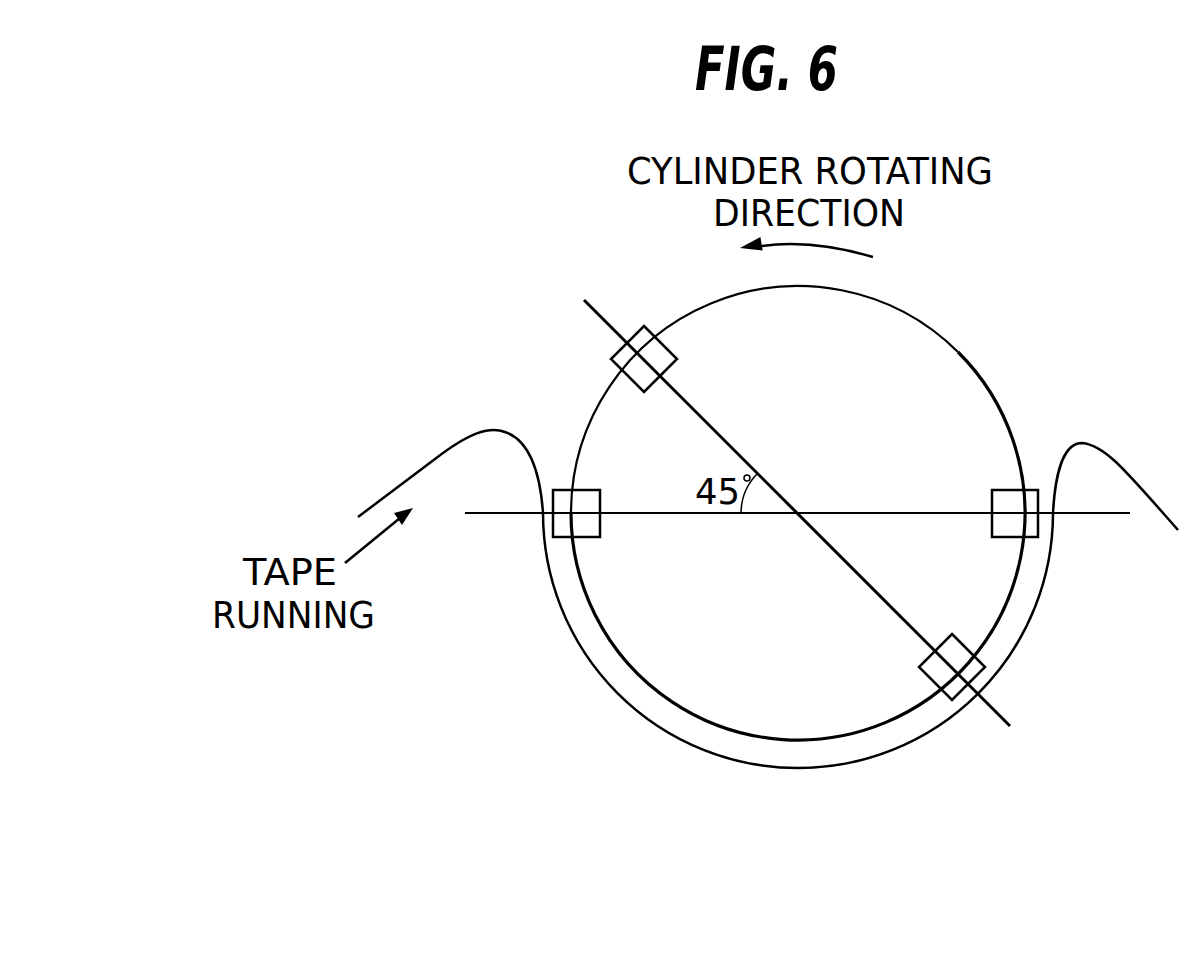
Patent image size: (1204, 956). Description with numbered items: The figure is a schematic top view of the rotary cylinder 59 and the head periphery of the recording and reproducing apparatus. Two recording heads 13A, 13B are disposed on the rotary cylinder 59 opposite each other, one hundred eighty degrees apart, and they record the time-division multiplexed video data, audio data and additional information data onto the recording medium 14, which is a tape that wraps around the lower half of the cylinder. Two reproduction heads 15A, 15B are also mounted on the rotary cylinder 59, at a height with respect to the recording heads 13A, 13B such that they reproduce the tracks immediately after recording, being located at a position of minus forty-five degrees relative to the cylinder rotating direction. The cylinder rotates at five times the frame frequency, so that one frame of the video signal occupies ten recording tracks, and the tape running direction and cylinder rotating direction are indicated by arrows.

The rotary cylinder 59 is at (977, 374).
The recording medium 14 is at (437, 462).
The recording head 13A is at (558, 490).
The recording head 13B is at (1032, 490).
The reproduction head 15A is at (628, 331).
The reproduction head 15B is at (982, 664).